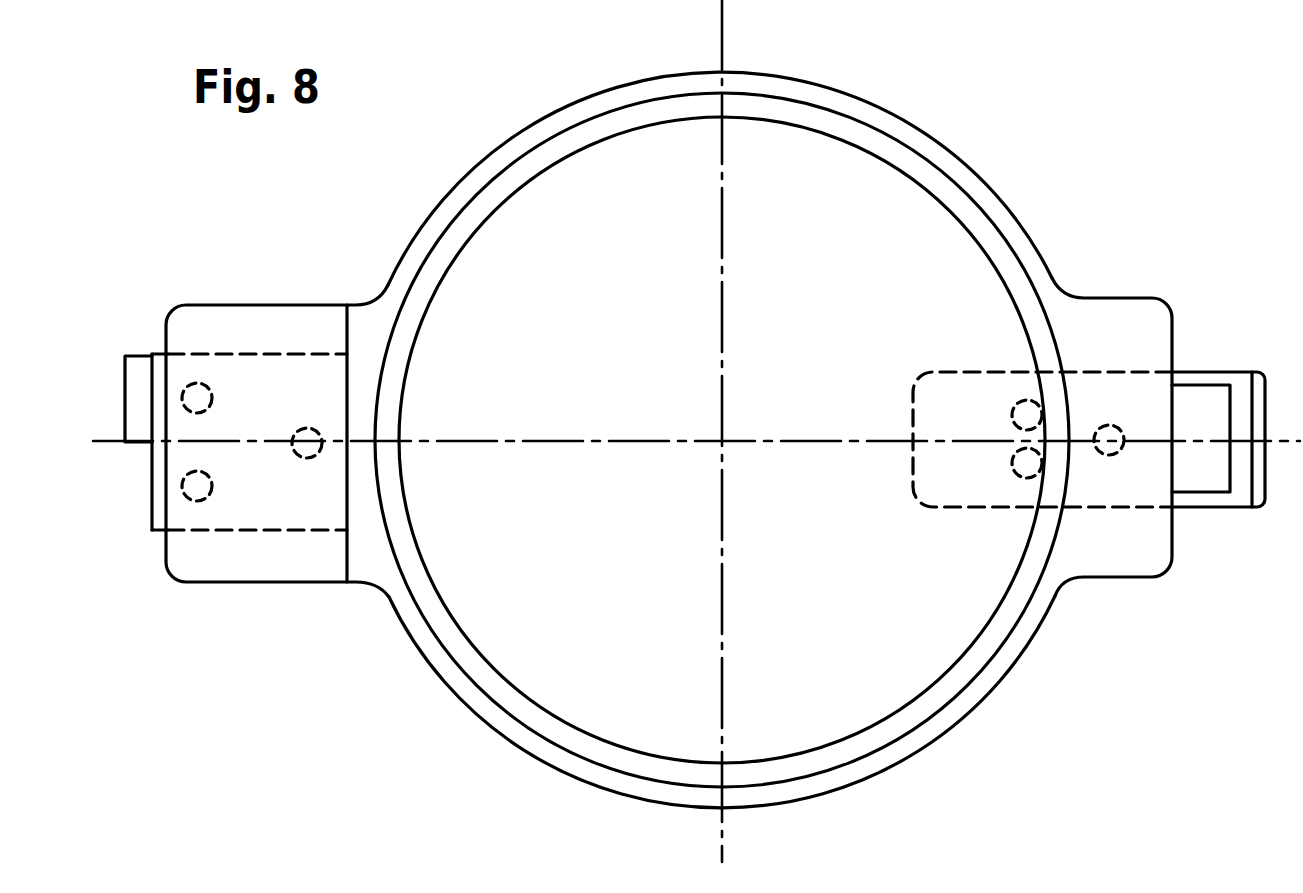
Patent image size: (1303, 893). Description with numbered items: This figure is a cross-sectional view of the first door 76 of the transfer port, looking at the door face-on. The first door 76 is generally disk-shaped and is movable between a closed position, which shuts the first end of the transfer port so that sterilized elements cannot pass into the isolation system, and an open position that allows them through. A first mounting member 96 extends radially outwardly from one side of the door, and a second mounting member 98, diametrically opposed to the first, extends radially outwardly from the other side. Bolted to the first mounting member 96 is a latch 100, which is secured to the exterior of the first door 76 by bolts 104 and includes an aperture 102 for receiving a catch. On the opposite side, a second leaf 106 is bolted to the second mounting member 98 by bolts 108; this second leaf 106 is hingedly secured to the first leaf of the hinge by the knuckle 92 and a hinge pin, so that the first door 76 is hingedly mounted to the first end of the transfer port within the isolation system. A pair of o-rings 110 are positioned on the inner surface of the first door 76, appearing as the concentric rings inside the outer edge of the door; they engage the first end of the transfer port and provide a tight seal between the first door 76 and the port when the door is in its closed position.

The first door 76 is at (933, 150).
The o-rings 110 is at (568, 130).
The second mounting member 98 is at (257, 328).
The first mounting member 96 is at (1145, 322).
The knuckle 92 is at (138, 373).
The second leaf 106 is at (313, 406).
The bolts 108 is at (197, 398).
The bolts 104 is at (1027, 463).
The latch 100 is at (1240, 382).
The aperture 102 is at (1220, 497).